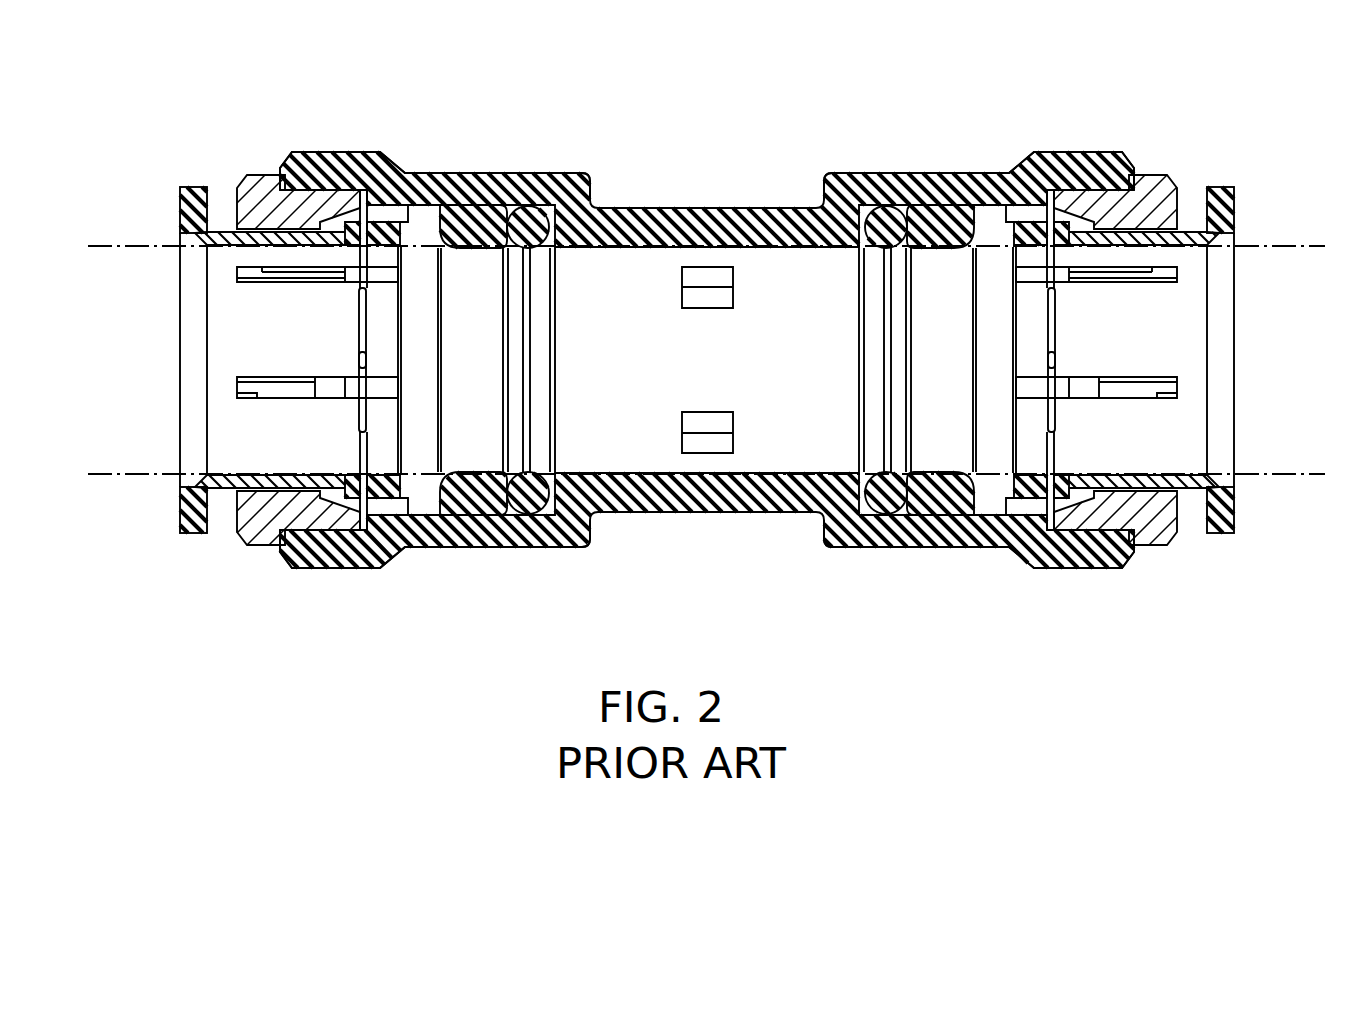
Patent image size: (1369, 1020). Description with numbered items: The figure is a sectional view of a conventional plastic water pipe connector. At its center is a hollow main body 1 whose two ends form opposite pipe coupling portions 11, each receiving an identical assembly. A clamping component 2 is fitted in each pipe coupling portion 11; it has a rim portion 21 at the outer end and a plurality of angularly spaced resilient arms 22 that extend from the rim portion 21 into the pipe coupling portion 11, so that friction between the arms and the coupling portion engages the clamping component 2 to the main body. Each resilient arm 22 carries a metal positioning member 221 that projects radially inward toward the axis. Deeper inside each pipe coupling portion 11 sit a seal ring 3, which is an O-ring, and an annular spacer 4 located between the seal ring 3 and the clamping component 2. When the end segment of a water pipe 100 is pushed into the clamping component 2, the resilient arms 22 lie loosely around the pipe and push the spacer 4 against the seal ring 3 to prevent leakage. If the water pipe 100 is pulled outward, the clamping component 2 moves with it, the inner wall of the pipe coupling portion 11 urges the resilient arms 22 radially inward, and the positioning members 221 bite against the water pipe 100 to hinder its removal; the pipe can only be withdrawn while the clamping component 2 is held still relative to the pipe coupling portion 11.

The hollow main body 1 is at (722, 210).
The pipe coupling portion 11 is at (498, 182).
The clamping component 2 is at (180, 189).
The rim portion 21 is at (190, 188).
The resilient arm 22 is at (277, 460).
The metal positioning member 221 is at (366, 328).
The seal ring 3 is at (545, 515).
The annular spacer 4 is at (466, 512).
The water pipe 100 is at (120, 474).